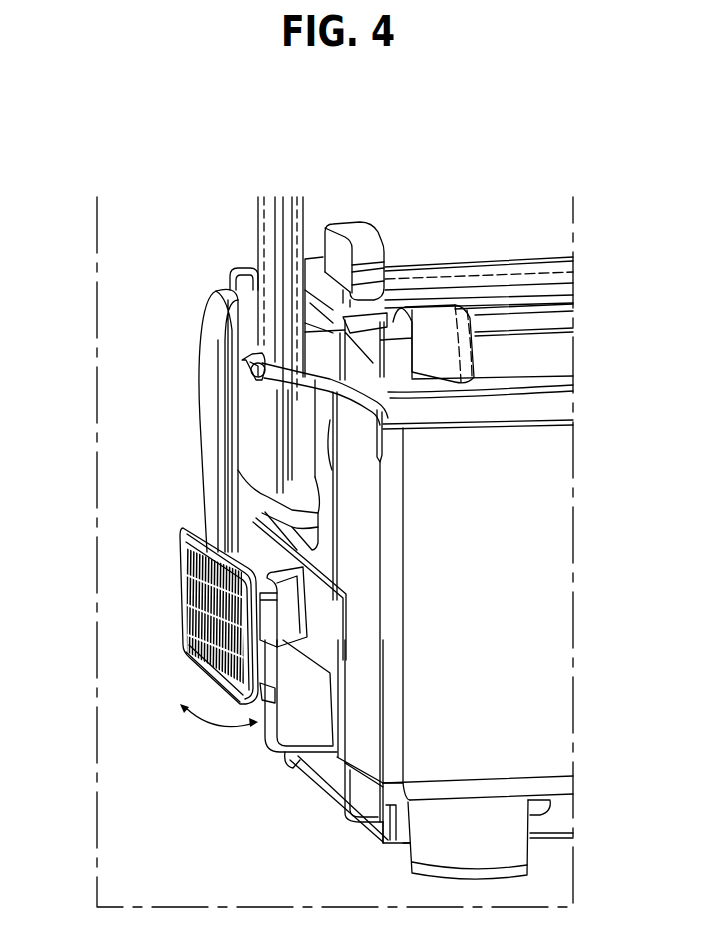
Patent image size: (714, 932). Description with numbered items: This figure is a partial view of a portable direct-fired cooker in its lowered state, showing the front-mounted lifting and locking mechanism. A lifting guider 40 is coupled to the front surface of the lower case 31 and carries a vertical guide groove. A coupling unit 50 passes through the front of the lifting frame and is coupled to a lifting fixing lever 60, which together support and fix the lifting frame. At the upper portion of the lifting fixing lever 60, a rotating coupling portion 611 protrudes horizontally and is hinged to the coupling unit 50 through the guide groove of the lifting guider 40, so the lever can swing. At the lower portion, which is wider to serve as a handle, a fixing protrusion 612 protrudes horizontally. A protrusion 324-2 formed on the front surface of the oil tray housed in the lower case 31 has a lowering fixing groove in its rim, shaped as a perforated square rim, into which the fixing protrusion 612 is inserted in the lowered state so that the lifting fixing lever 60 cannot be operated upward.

The lifting guider 40 is at (292, 197).
The coupling unit 50 is at (433, 330).
The lower case 31 is at (533, 517).
The lifting fixing lever 60 is at (188, 462).
The rotating coupling portion 611 is at (241, 356).
The fixing protrusion 612 is at (268, 615).
The protrusion 324-2 is at (293, 598).